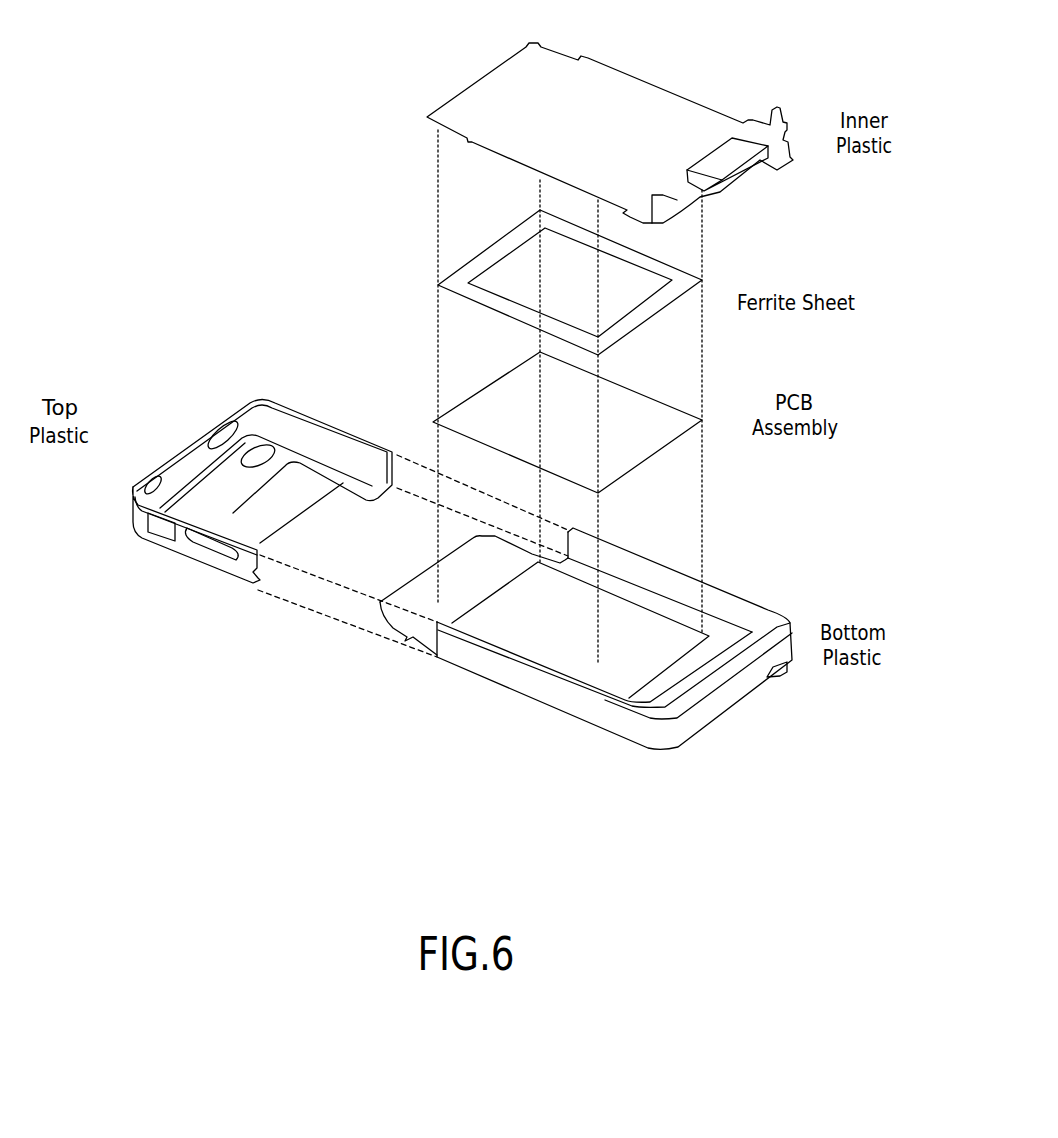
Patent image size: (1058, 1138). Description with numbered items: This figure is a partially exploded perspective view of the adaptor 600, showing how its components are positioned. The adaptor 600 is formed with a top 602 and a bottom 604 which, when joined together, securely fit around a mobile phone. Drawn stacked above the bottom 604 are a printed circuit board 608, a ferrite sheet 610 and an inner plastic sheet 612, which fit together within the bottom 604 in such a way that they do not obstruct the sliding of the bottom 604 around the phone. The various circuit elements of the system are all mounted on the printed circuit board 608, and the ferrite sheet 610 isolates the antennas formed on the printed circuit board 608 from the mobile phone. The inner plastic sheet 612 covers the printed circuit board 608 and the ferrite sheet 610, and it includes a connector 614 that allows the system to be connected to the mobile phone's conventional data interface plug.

The adaptor 600 is at (279, 262).
The top 602 is at (253, 410).
The bottom 604 is at (611, 718).
The printed circuit board 608 is at (628, 470).
The ferrite sheet 610 is at (647, 323).
The inner plastic sheet 612 is at (621, 72).
The connector 614 is at (721, 150).